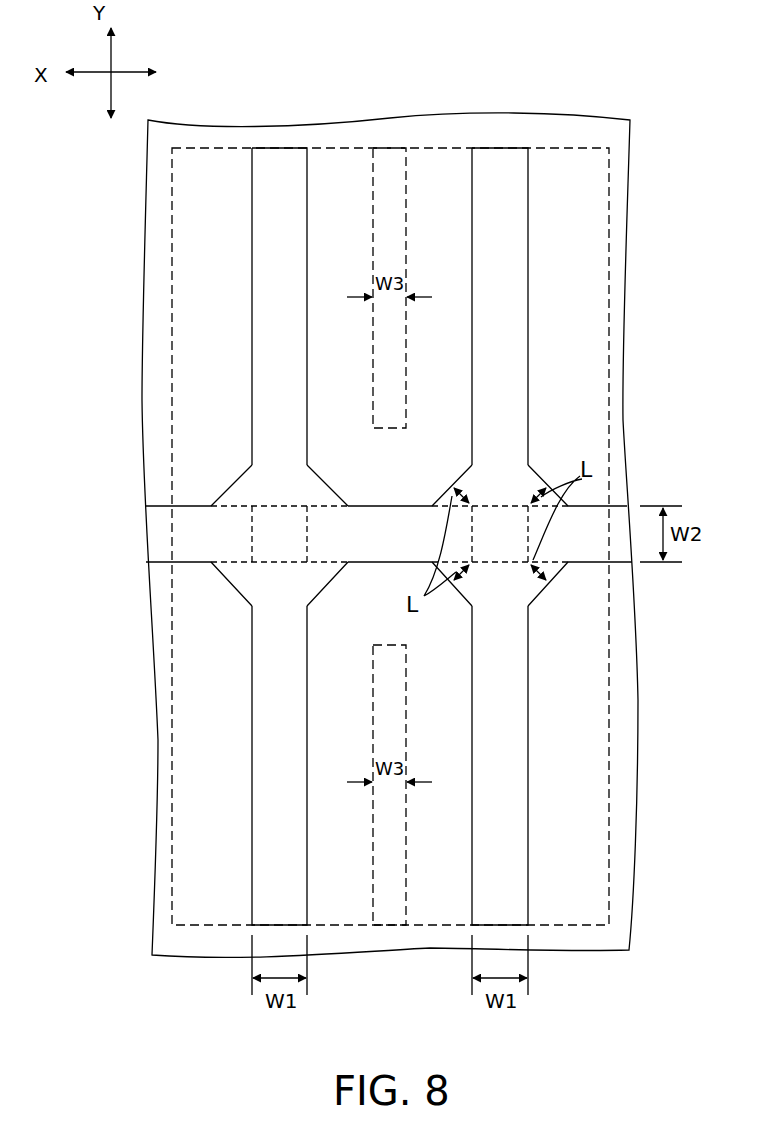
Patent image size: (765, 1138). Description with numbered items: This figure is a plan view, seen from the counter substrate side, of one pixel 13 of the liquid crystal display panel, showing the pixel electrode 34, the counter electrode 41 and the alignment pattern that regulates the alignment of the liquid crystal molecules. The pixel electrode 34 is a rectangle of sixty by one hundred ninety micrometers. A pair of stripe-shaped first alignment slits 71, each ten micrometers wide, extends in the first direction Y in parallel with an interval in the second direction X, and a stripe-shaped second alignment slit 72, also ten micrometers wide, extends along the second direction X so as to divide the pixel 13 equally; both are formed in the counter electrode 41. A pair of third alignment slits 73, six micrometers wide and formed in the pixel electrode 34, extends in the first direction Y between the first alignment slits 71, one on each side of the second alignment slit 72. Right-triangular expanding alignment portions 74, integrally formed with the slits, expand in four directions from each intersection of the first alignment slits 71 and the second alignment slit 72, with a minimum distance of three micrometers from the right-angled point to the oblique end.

The pixel 13 is at (611, 145).
The pixel electrode 34 is at (610, 203).
The counter electrode 41 is at (631, 243).
The first alignment slits 71 is at (306, 162).
The second alignment slit 72 is at (162, 506).
The third alignment slit 73 is at (374, 162).
The expanding alignment portion 74 is at (318, 493).